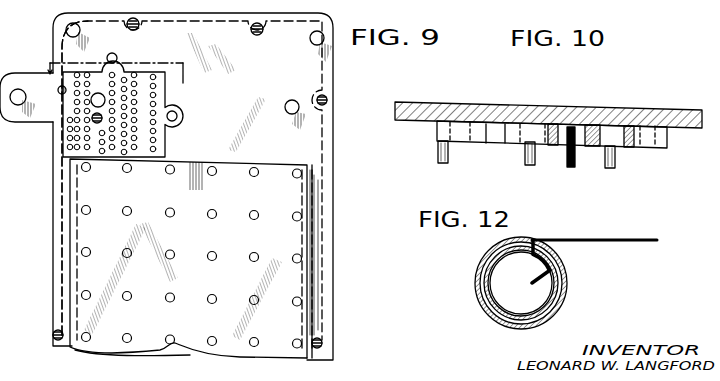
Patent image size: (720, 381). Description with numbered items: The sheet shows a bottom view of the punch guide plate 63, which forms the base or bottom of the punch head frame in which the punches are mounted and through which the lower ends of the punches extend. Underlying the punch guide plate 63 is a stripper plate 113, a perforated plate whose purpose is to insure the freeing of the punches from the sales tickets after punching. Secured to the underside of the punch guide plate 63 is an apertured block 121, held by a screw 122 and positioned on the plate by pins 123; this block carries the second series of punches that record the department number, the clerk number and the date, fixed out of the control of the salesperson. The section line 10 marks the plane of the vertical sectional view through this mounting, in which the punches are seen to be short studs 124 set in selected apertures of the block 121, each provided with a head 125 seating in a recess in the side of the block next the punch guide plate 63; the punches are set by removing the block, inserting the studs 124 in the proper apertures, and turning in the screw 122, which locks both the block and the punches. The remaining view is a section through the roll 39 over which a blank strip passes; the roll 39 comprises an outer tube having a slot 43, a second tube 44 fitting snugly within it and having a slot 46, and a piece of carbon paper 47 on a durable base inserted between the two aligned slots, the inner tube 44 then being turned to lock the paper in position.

In FIG. 9, the section line 10 is at (116, 73).
In FIG. 9, the punch guide plate 63 is at (270, 133).
In FIG. 9, the stripper plate 113 is at (283, 193).
In FIG. 9, the apertured block 121 is at (128, 77).
In FIG. 10, the apertured block 121 is at (437, 131).
In FIG. 9, the screw 122 is at (95, 120).
In FIG. 10, the screw 122 is at (506, 143).
In FIG. 9, the pins 123 is at (117, 57).
In FIG. 10, the studs 124 is at (573, 158).
In FIG. 10, the heads 125 is at (575, 127).
In FIG. 12, the roll 39 is at (559, 262).
In FIG. 12, the slot 43 is at (536, 239).
In FIG. 12, the second tube 44 is at (562, 291).
In FIG. 12, the slot 46 is at (562, 272).
In FIG. 12, the carbon paper 47 is at (615, 239).